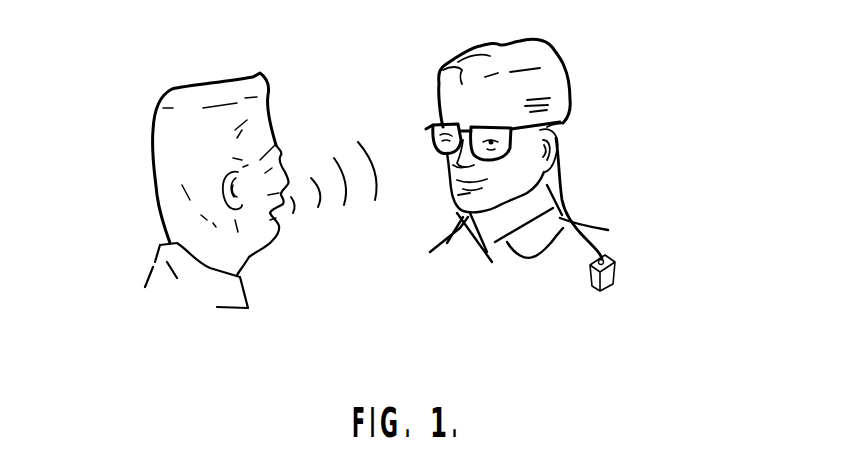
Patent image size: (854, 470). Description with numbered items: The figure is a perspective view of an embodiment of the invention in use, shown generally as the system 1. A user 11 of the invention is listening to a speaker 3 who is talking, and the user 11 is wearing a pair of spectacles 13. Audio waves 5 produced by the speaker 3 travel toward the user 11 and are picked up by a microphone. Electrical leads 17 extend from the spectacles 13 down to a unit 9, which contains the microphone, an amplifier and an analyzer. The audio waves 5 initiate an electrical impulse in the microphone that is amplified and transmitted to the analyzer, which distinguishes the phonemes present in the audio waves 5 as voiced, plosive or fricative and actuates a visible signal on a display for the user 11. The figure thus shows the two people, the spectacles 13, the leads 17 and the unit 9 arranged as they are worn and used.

The speaker (person talking) 1 is at (556, 25).
The speaker 3 is at (170, 88).
The audio waves 5 is at (337, 155).
The unit 9 is at (617, 263).
The user 11 is at (442, 63).
The pair of spectacles 13 is at (432, 123).
The electrical leads 17 is at (553, 168).